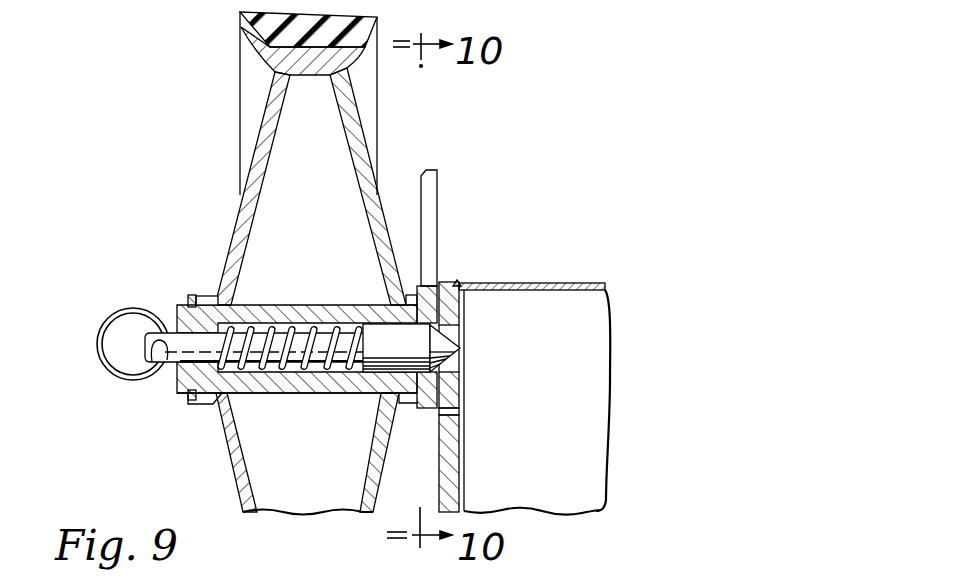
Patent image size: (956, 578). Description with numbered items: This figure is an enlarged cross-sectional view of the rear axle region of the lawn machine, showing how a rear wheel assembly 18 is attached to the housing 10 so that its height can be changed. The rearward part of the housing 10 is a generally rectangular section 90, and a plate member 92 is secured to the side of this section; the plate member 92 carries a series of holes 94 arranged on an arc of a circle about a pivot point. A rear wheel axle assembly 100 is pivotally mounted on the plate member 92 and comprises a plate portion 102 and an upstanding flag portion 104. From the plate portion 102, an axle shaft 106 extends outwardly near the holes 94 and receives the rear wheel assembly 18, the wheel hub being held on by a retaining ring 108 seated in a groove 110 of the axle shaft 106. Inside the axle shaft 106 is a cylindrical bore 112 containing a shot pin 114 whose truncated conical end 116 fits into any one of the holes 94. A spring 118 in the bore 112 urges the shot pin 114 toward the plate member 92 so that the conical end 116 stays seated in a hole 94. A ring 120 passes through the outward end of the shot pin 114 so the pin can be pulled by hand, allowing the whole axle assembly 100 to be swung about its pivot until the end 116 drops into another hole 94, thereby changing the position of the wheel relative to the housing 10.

The housing 10 is at (597, 280).
The rear wheel assembly 18 is at (228, 466).
The rectangular section 90 is at (522, 283).
The plate member 92 is at (456, 280).
The holes 94 is at (460, 337).
The rear wheel axle assembly 100 is at (206, 412).
The plate portion 102 is at (427, 409).
The flag portion 104 is at (437, 182).
The axle shaft 106 is at (287, 394).
The retaining ring 108 is at (190, 296).
The groove 110 is at (188, 305).
The cylindrical bore 112 is at (320, 372).
The shot pin 114 is at (380, 330).
The truncated conical end 116 is at (455, 348).
The spring 118 is at (293, 328).
The ring 120 is at (122, 380).